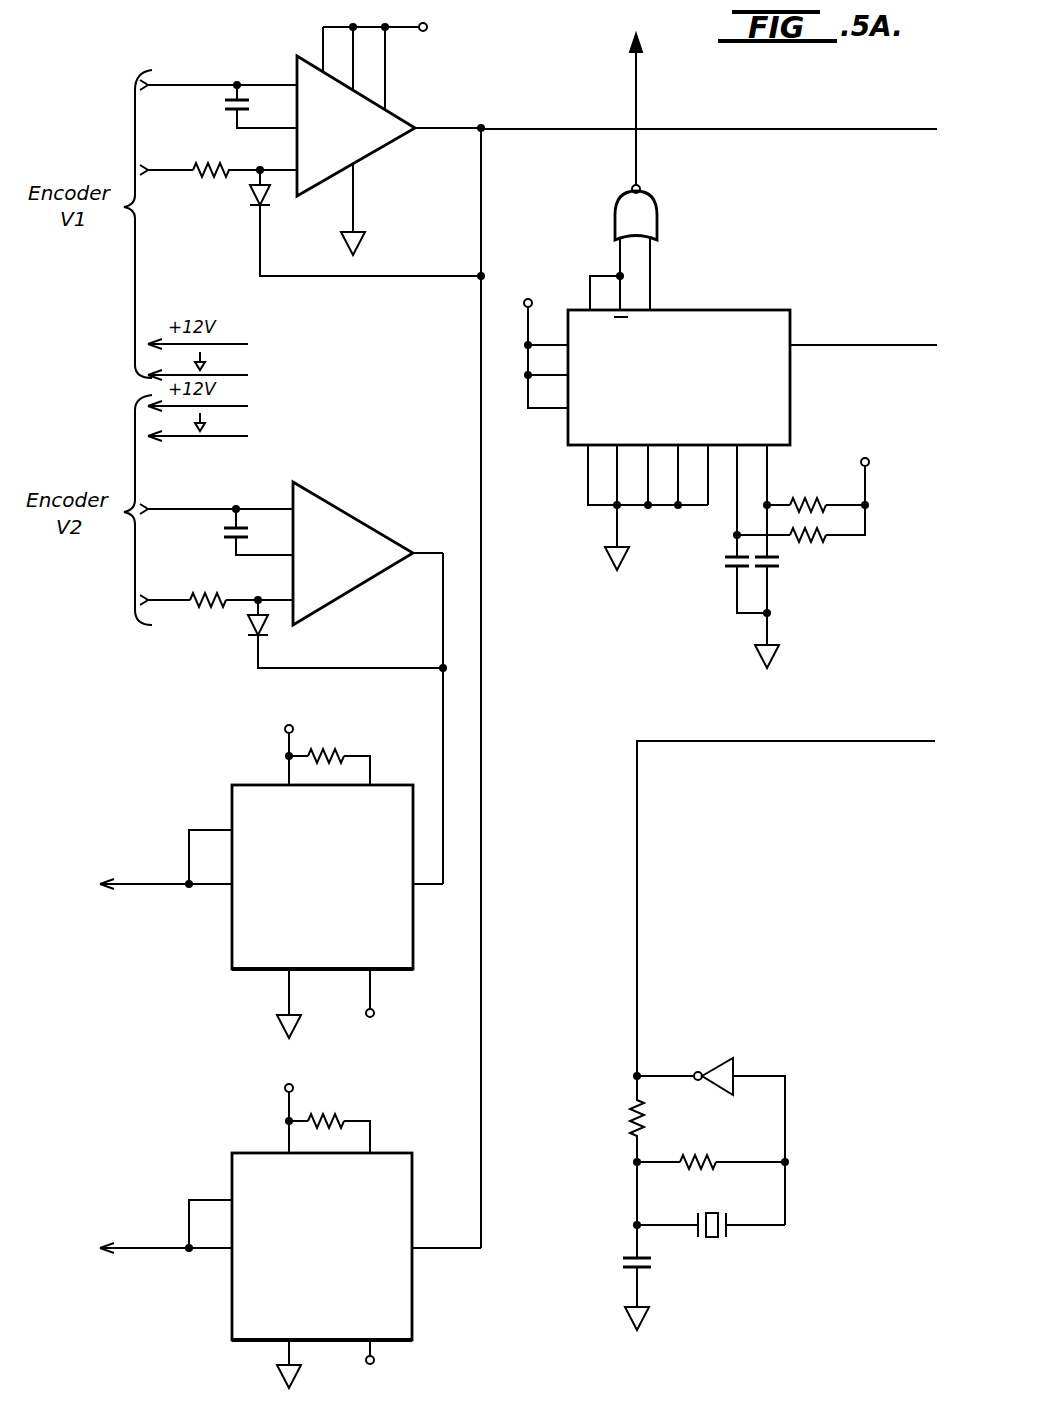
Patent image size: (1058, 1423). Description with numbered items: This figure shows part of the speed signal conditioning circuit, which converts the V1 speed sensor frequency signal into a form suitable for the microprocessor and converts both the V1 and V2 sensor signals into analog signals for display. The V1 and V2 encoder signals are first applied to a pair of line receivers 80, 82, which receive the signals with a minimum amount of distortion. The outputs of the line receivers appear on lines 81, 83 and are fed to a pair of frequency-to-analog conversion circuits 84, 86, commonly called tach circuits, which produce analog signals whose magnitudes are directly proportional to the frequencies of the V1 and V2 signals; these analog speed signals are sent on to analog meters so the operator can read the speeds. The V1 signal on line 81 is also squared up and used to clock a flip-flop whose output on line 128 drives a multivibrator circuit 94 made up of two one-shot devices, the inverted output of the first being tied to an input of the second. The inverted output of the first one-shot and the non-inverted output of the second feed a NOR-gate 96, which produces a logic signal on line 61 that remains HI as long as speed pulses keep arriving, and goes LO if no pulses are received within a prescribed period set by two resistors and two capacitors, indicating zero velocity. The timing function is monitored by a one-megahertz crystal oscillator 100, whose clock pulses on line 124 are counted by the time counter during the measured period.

The line receiver 80 is at (297, 63).
The line 81 is at (532, 129).
The line receiver 82 is at (348, 514).
The line 83 is at (443, 695).
The frequency-to-analog conversion circuit 84 is at (406, 952).
The frequency-to-analog conversion circuit 86 is at (408, 1153).
The line 61 is at (637, 76).
The NOR-gate 96 is at (655, 212).
The multivibrator circuit 94 is at (732, 310).
The line 128 is at (863, 345).
The line 124 is at (828, 740).
The crystal oscillator 100 is at (802, 1122).